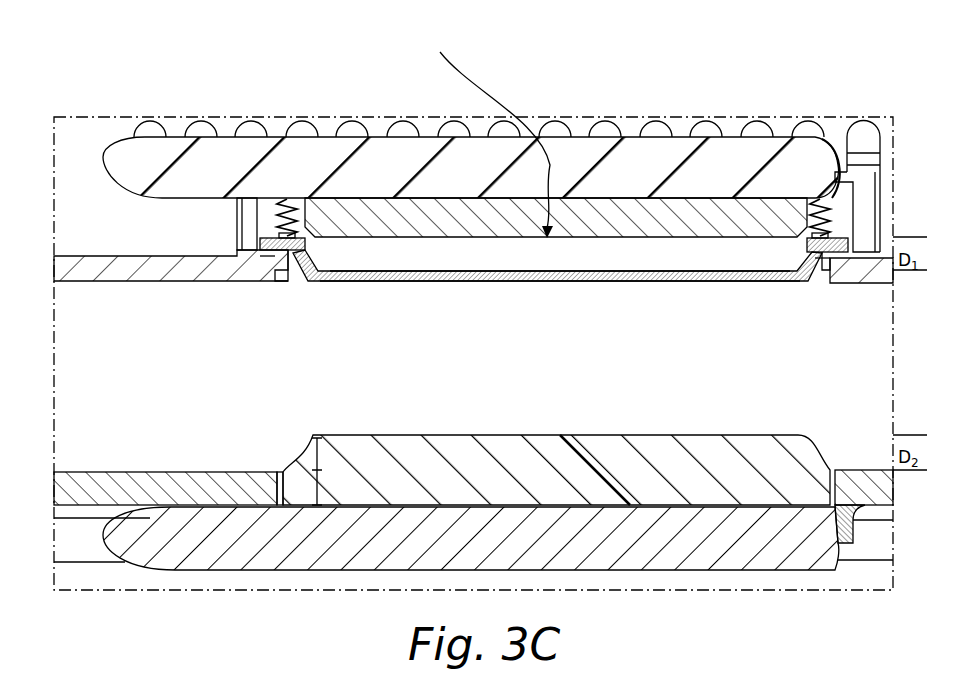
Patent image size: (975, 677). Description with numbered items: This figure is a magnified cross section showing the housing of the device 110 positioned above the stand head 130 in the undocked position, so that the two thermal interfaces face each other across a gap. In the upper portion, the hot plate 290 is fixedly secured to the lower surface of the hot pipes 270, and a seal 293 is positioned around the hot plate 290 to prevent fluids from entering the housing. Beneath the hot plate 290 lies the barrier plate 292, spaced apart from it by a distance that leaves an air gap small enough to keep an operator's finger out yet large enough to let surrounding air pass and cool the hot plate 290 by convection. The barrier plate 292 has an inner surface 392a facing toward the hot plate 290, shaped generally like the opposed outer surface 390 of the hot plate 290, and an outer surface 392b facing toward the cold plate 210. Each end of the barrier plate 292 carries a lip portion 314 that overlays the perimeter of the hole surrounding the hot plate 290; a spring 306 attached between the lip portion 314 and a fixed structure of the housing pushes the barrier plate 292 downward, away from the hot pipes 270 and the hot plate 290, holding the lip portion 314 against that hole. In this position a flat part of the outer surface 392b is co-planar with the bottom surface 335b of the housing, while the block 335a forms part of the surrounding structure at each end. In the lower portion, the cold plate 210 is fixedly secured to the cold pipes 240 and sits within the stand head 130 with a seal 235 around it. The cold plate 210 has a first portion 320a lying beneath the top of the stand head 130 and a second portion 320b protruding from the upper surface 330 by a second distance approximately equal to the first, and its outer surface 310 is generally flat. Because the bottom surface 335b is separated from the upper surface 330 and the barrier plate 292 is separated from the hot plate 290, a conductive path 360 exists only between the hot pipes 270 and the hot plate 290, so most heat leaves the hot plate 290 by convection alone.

The device 110 is at (44, 140).
The stand head 130 is at (41, 548).
The cold plate 210 is at (495, 445).
The seal 235 is at (282, 470).
The cold pipes 240 is at (293, 566).
The hot pipes 270 is at (683, 150).
The hot plate 290 is at (723, 196).
The barrier plate 292 is at (400, 278).
The seal 293 is at (247, 212).
The spring 306 is at (292, 250).
The outer surface of the cold plate 310 is at (625, 450).
The lip portion 314 is at (270, 254).
The first portion of the cold plate 320a is at (339, 487).
The second portion of the cold plate 320b is at (339, 454).
The upper surface of the stand head 330 is at (195, 472).
The upper support block 335a is at (237, 243).
The bottom surface of the housing 335b is at (178, 282).
The conductive path 360 is at (486, 135).
The outer surface of the hot plate 390 is at (437, 238).
The inner surface of the barrier plate 392a is at (560, 271).
The outer surface of the barrier plate 392b is at (620, 283).